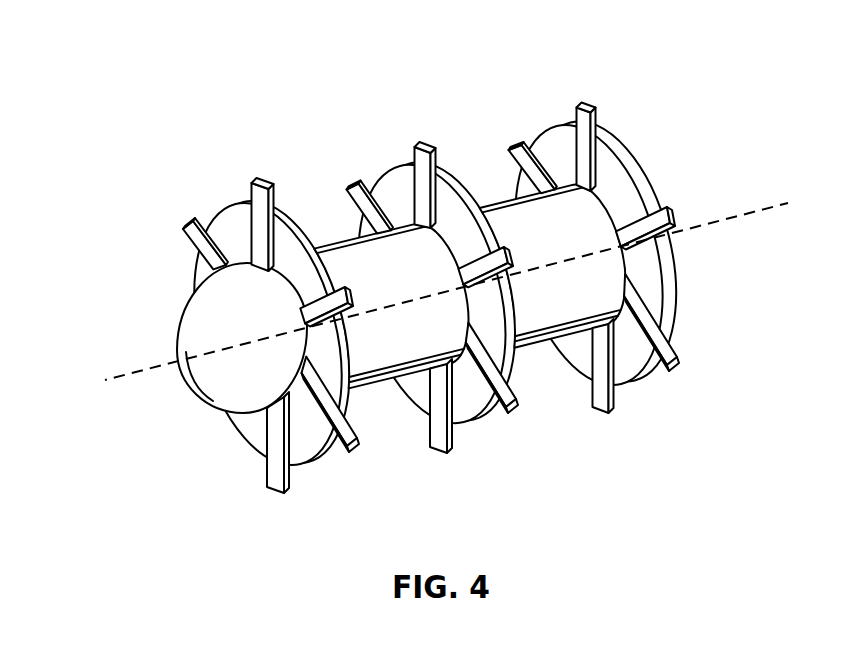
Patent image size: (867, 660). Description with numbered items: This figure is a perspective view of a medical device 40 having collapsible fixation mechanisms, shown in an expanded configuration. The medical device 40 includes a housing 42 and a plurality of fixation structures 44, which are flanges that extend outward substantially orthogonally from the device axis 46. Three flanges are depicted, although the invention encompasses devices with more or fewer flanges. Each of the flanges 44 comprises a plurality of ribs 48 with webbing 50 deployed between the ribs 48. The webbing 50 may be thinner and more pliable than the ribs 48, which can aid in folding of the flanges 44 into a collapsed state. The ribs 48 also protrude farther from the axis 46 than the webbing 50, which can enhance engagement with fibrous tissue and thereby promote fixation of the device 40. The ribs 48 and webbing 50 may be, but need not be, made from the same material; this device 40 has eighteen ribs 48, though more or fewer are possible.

The medical device 40 is at (425, 296).
The housing 42 is at (315, 248).
The fixation structures 44 is at (340, 471).
The device axis 46 is at (728, 199).
The ribs 48 is at (564, 107).
The webbing 50 is at (603, 180).